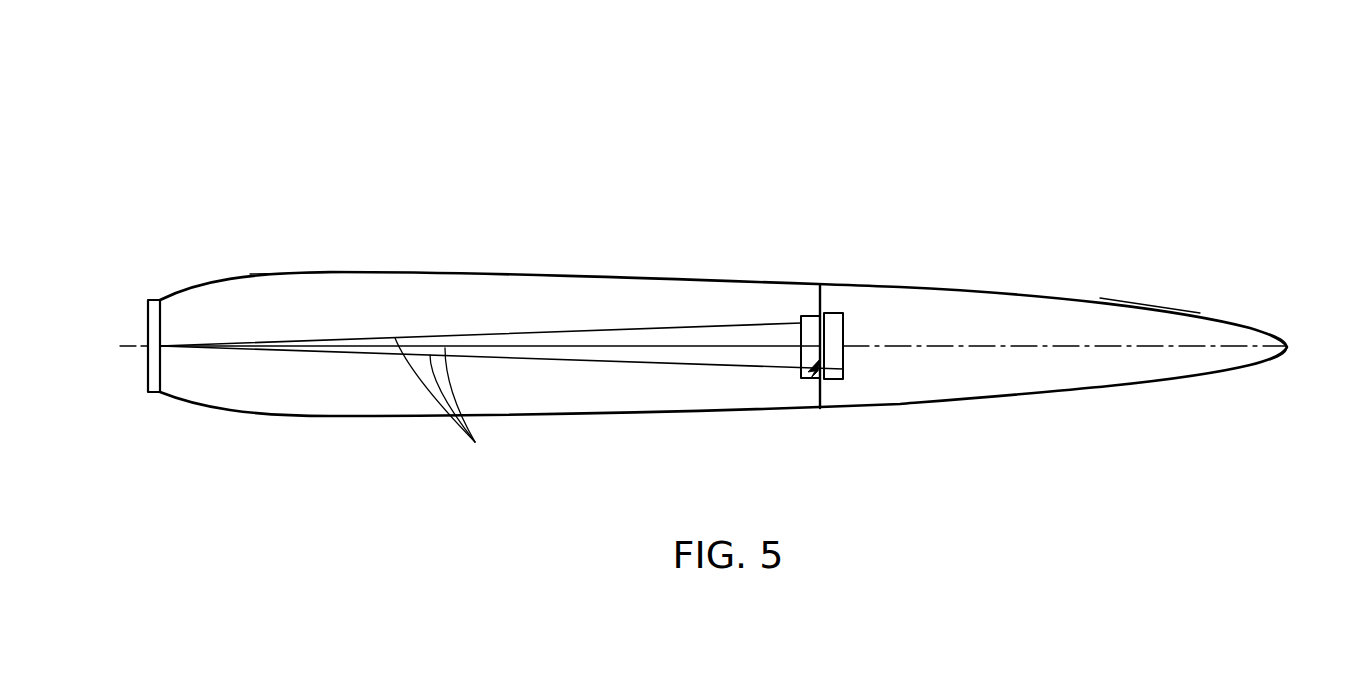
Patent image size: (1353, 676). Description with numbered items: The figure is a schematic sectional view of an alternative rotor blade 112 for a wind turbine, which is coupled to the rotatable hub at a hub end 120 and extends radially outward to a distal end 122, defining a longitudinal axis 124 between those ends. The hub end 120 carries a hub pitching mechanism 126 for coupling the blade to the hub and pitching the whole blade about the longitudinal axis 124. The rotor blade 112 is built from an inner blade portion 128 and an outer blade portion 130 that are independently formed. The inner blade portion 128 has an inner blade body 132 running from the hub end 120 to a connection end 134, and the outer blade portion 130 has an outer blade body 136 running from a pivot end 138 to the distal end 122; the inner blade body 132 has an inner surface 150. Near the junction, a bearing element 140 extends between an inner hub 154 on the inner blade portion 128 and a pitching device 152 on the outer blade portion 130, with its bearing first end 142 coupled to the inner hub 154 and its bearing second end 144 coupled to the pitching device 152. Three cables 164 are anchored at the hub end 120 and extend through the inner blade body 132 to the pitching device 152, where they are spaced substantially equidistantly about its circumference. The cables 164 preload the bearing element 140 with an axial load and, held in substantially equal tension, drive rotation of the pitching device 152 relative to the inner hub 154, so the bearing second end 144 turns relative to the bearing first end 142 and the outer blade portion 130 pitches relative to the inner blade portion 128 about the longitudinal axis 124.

The rotor blade 112 is at (1015, 105).
The hub end 120 is at (148, 312).
The distal end 122 is at (1288, 330).
The longitudinal axis 124 is at (120, 358).
The hub pitching mechanism 126 is at (152, 378).
The inner blade portion 128 is at (682, 247).
The outer blade portion 130 is at (1007, 268).
The inner blade body 132 is at (300, 272).
The connection end 134 is at (818, 302).
The outer blade body 136 is at (1128, 298).
The pivot end 138 is at (822, 393).
The bearing element 140 is at (812, 380).
The bearing first end 142 is at (843, 372).
The bearing second end 144 is at (836, 308).
The inner surface 150 is at (538, 415).
The pitching device 152 is at (838, 348).
The inner hub 154 is at (803, 358).
The cables 164 is at (446, 404).